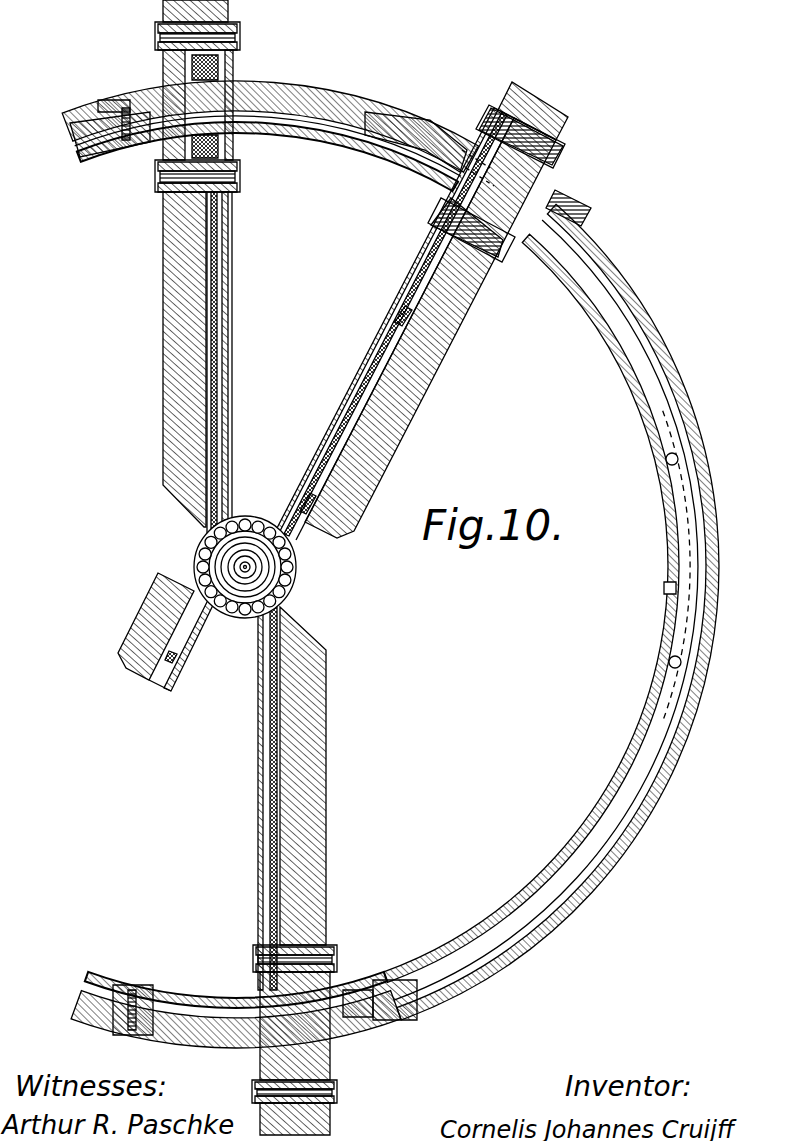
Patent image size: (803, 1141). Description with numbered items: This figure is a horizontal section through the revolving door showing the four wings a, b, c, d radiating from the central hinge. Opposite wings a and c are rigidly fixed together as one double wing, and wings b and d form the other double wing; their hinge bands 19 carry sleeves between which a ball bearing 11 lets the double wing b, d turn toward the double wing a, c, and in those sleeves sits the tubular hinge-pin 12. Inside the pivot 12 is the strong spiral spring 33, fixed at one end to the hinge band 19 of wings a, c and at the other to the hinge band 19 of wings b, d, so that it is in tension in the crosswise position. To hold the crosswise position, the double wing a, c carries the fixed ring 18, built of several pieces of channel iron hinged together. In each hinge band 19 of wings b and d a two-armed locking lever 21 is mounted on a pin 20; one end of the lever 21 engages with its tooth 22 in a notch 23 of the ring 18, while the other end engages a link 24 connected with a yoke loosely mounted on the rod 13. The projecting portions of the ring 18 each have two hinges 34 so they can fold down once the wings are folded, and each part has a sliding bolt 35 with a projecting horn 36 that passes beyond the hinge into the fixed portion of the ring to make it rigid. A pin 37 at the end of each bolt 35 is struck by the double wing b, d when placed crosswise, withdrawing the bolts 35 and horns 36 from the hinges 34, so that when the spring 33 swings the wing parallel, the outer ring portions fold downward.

The ball bearing 11 is at (248, 526).
The tubular hinge-pin 12 is at (262, 567).
The rod 13 is at (256, 574).
The fixed ring 18 is at (318, 135).
The hinge band 19 is at (214, 350).
The pin 20 is at (436, 268).
The two-armed locking lever 21 is at (400, 316).
The tooth 22 is at (490, 190).
The notch 23 is at (664, 588).
The link 24 is at (308, 504).
The spiral spring 33 is at (200, 556).
The hinge 34 is at (120, 147).
The sliding bolt 35 is at (645, 380).
The projecting horn 36 is at (283, 113).
The pin 37 is at (666, 462).
The door wing a is at (165, 268).
The door wing b is at (455, 312).
The door wing c is at (326, 700).
The door wing d is at (145, 620).